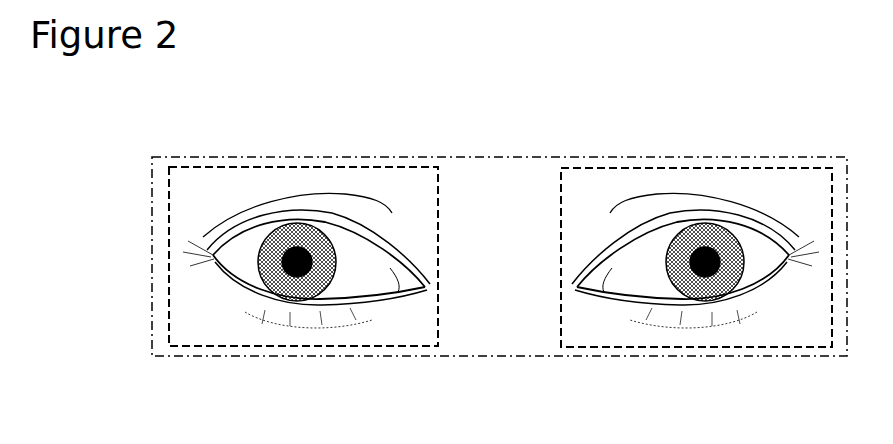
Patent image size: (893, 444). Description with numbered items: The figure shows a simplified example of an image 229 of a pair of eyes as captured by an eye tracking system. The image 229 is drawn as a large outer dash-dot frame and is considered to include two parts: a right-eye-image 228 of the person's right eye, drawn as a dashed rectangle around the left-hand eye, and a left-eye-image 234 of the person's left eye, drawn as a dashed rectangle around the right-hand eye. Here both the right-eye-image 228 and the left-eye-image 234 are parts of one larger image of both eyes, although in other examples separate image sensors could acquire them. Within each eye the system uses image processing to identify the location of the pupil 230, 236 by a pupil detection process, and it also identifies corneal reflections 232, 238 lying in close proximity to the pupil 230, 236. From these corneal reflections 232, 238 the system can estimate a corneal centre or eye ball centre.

The right-eye-image 228 is at (205, 165).
The image 229 is at (498, 153).
The pupil 230 is at (278, 217).
The corneal reflection 232 is at (313, 268).
The left-eye-image 234 is at (795, 165).
The pupil 236 is at (720, 217).
The corneal reflection 238 is at (689, 268).